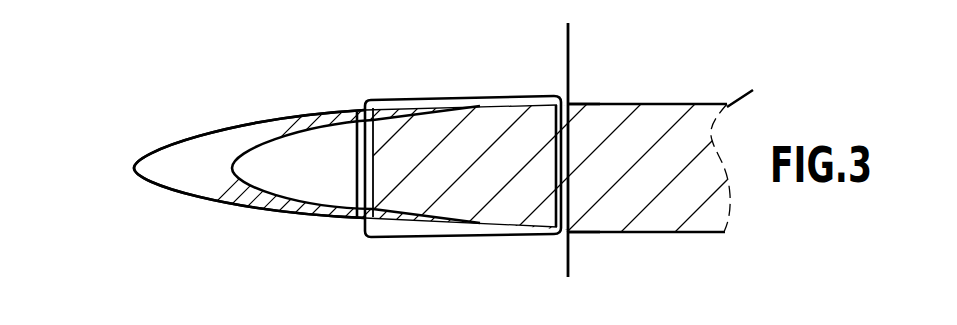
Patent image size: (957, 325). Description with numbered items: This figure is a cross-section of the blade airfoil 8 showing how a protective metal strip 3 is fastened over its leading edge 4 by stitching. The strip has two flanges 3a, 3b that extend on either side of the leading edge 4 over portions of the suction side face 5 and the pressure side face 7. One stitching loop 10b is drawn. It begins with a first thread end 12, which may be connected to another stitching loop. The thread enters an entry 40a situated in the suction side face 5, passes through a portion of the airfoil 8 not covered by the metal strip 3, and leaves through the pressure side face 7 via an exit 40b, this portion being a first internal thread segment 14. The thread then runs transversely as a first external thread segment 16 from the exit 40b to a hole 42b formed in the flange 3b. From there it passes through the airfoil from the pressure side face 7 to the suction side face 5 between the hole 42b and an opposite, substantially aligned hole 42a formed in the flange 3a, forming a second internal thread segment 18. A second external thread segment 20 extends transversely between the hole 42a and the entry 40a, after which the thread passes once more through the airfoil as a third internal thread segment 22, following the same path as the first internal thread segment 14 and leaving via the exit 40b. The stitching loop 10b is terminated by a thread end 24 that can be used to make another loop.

The metal strip 3 is at (132, 169).
The flange 3a is at (243, 213).
The flange 3b is at (252, 121).
The leading edge 4 is at (228, 165).
The suction side face 5 is at (680, 234).
The pressure side face 7 is at (688, 106).
The airfoil 8 is at (698, 151).
The stitching loop 10b is at (223, 253).
The first thread end 12 is at (568, 273).
The first internal thread segment 14 is at (568, 214).
The first external thread segment 16 is at (460, 97).
The second internal thread segment 18 is at (372, 172).
The second external thread segment 20 is at (438, 240).
The third internal thread segment 22 is at (572, 120).
The thread end 24 is at (568, 63).
The entry 40a is at (562, 237).
The exit 40b is at (562, 100).
The hole 42a is at (358, 227).
The hole 42b is at (358, 117).